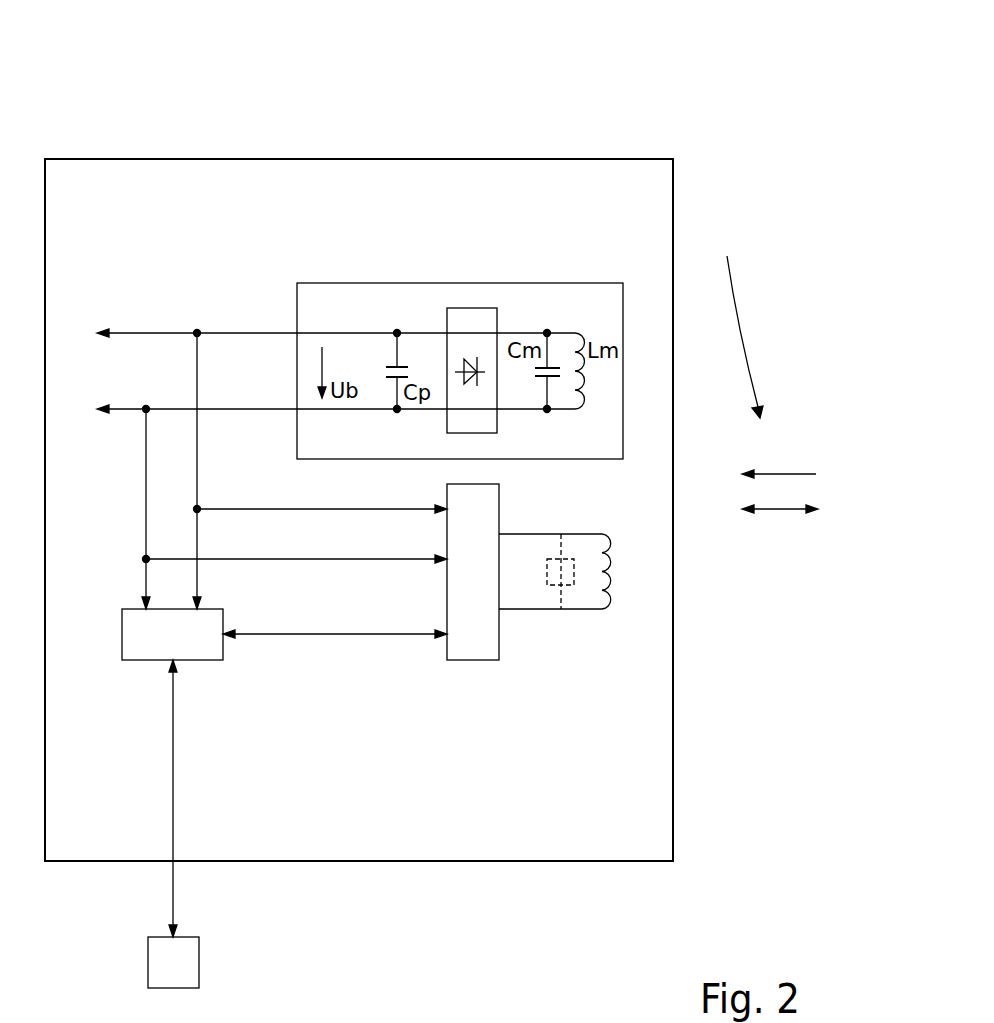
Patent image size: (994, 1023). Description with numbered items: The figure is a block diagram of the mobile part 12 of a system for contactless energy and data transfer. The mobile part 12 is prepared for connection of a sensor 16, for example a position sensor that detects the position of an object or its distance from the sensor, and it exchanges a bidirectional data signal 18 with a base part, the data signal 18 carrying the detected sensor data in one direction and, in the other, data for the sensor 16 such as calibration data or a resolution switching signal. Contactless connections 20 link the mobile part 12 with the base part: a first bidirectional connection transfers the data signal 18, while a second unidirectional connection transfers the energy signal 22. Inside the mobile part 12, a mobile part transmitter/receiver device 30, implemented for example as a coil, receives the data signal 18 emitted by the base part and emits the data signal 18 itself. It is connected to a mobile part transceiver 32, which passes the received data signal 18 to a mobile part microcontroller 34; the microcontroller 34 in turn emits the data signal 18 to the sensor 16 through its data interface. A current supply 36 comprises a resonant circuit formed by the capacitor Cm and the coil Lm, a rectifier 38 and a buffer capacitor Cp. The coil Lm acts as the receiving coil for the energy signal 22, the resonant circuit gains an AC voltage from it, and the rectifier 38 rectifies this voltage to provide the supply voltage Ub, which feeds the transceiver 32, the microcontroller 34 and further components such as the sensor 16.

The mobile part 12 is at (533, 158).
The sensor 16 is at (200, 953).
The data signal 18 is at (445, 636).
The contactless connections 20 is at (738, 323).
The energy signal 22 is at (799, 473).
The mobile part transmitter/receiver device 30 is at (582, 547).
The mobile part transceiver 32 is at (499, 505).
The mobile part microcontroller 34 is at (147, 660).
The current supply 36 is at (560, 284).
The rectifier 38 is at (447, 320).